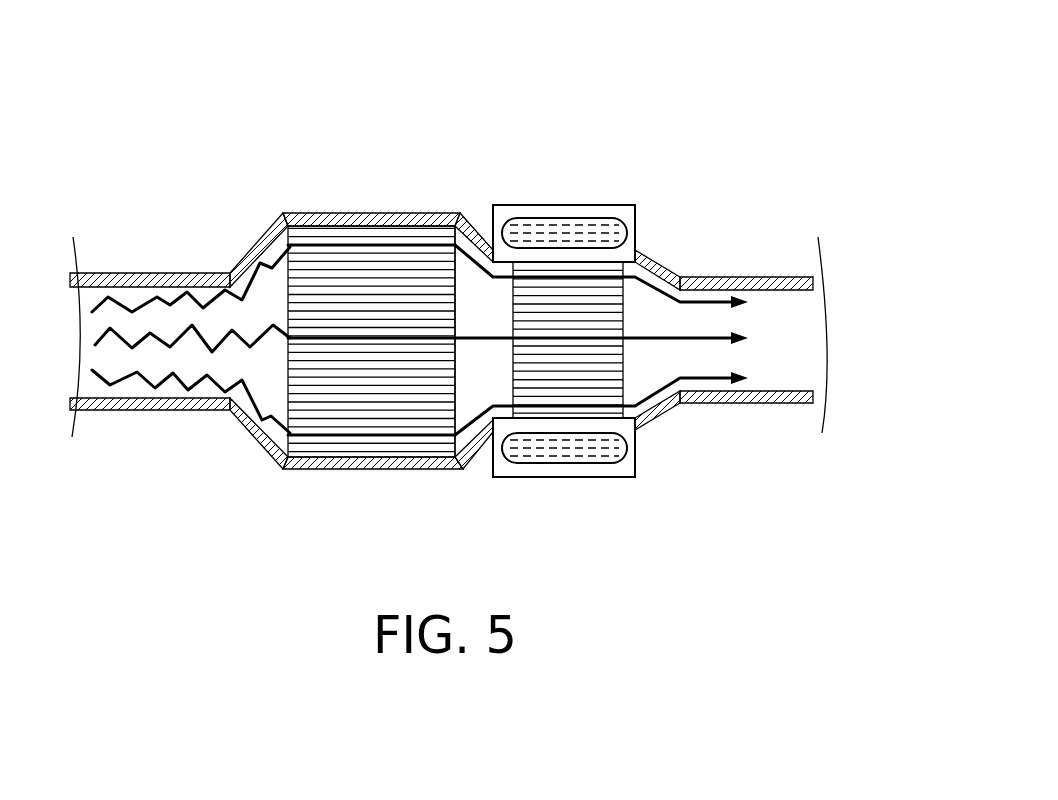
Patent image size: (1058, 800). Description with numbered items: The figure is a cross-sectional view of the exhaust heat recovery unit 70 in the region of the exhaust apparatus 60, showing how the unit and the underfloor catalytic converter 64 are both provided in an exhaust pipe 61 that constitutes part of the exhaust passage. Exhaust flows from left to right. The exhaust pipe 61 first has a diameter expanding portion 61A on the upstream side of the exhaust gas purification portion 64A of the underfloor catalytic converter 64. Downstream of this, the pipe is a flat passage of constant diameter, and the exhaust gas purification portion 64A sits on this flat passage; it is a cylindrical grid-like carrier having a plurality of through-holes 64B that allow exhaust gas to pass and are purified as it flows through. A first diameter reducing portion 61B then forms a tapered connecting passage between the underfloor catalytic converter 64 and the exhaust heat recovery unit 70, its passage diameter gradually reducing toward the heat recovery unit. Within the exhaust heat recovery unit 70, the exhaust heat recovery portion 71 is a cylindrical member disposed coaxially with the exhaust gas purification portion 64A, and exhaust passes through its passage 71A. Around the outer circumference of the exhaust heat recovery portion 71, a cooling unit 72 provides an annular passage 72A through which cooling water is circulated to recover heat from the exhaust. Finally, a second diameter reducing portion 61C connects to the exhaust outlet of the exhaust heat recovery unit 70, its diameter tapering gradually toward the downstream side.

The exhaust gas purification device 60 is at (780, 97).
The exhaust pipe 61 is at (131, 273).
The diameter expanding portion 61A is at (260, 240).
The first diameter reducing portion 61B is at (476, 233).
The second diameter reducing portion 61C is at (666, 268).
The underfloor catalytic converter 64 is at (275, 455).
The exhaust gas purification portion 64A is at (467, 448).
The through-holes 64B is at (368, 443).
The exhaust heat recovery unit 70 is at (582, 491).
The exhaust heat recovery portion 71 is at (641, 264).
The passage of heating element 71A is at (607, 380).
The cooling unit 72 is at (606, 205).
The annular passage 72A is at (556, 228).